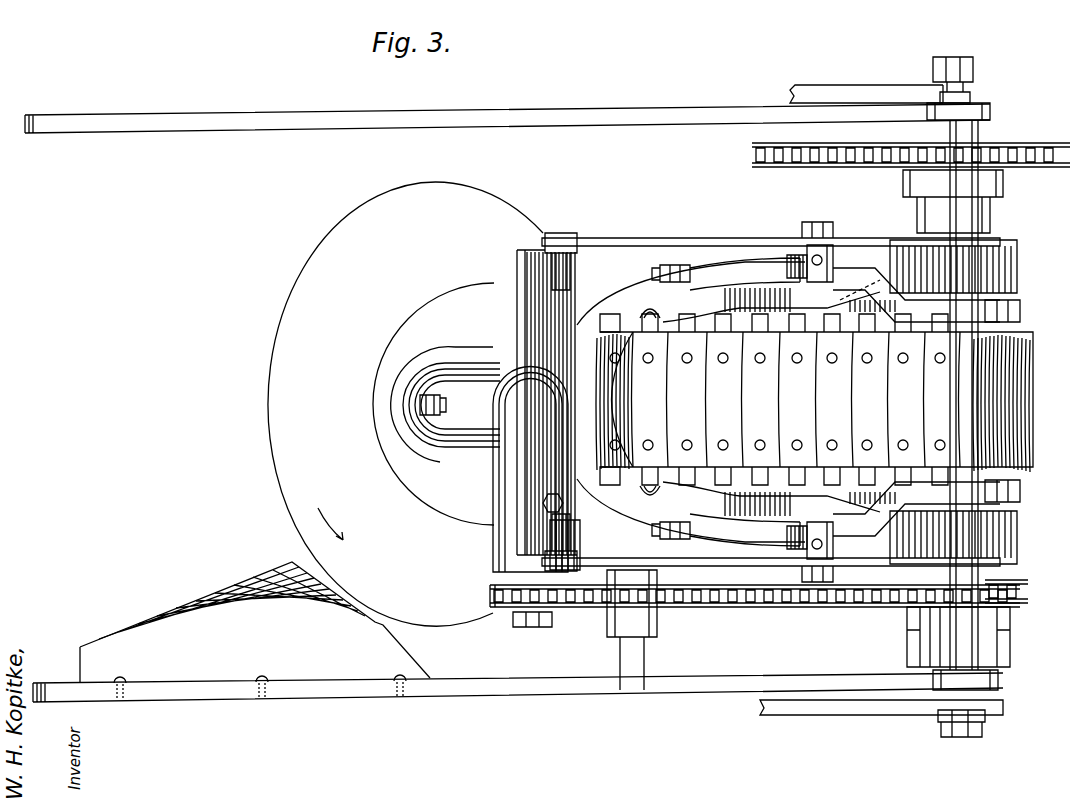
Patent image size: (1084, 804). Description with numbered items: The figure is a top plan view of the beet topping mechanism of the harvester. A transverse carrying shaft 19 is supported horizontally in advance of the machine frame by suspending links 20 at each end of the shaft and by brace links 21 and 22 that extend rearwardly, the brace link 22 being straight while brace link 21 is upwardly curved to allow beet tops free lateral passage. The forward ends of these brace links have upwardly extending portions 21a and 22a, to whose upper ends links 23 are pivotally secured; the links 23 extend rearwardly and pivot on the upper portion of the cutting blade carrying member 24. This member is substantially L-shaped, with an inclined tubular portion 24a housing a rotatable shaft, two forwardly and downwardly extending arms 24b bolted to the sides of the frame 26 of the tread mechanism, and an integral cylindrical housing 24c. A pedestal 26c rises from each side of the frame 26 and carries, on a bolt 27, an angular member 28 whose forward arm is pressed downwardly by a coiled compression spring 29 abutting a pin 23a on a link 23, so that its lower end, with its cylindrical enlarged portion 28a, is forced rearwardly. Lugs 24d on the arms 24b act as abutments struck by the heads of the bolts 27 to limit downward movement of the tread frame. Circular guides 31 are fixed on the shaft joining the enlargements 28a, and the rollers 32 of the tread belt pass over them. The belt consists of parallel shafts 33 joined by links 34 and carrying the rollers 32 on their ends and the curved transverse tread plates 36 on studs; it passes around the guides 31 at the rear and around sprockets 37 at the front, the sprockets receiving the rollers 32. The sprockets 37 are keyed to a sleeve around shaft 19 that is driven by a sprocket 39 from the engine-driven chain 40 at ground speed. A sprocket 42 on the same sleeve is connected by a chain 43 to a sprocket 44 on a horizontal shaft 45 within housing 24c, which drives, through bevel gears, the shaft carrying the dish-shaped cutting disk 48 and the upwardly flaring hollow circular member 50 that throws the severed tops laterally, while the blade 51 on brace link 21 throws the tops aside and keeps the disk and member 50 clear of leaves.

The transverse carrying shaft 19 is at (953, 57).
The suspending links 20 is at (826, 92).
The brace link 21 is at (550, 700).
The upwardly extending portion 21a is at (990, 690).
The brace link 22 is at (608, 114).
The upwardly extending portion 22a is at (990, 110).
The links 23 is at (862, 238).
The pins 23a is at (836, 270).
The cutting blade carrying member 24 is at (520, 356).
The inclined tubular portion 24a is at (460, 440).
The arms 24b is at (620, 256).
The cylindrical housing 24c is at (500, 487).
The lugs 24d is at (676, 265).
The frame of the tread mechanism 26 is at (840, 290).
The pedestal 26c is at (771, 402).
The bolt 27 is at (720, 266).
The angular member 28 is at (750, 265).
The enlarged portions 28a is at (648, 312).
The coiled compression springs 29 is at (798, 250).
The circular guides 31 is at (650, 330).
The rollers 32 is at (822, 325).
The parallel shafts 33 is at (867, 281).
The links 34 is at (632, 424).
The curved transverse tread plates 36 is at (785, 399).
The sprockets 37 is at (1015, 310).
The sprocket 39 is at (973, 201).
The chain 40 is at (850, 167).
The sprocket 42 is at (1005, 588).
The chain 43 is at (786, 608).
The sprocket 44 is at (498, 610).
The horizontal shaft 45 is at (533, 628).
The cutting disk 48 is at (272, 478).
The hollow circular member 50 is at (376, 424).
The blade 51 is at (200, 600).